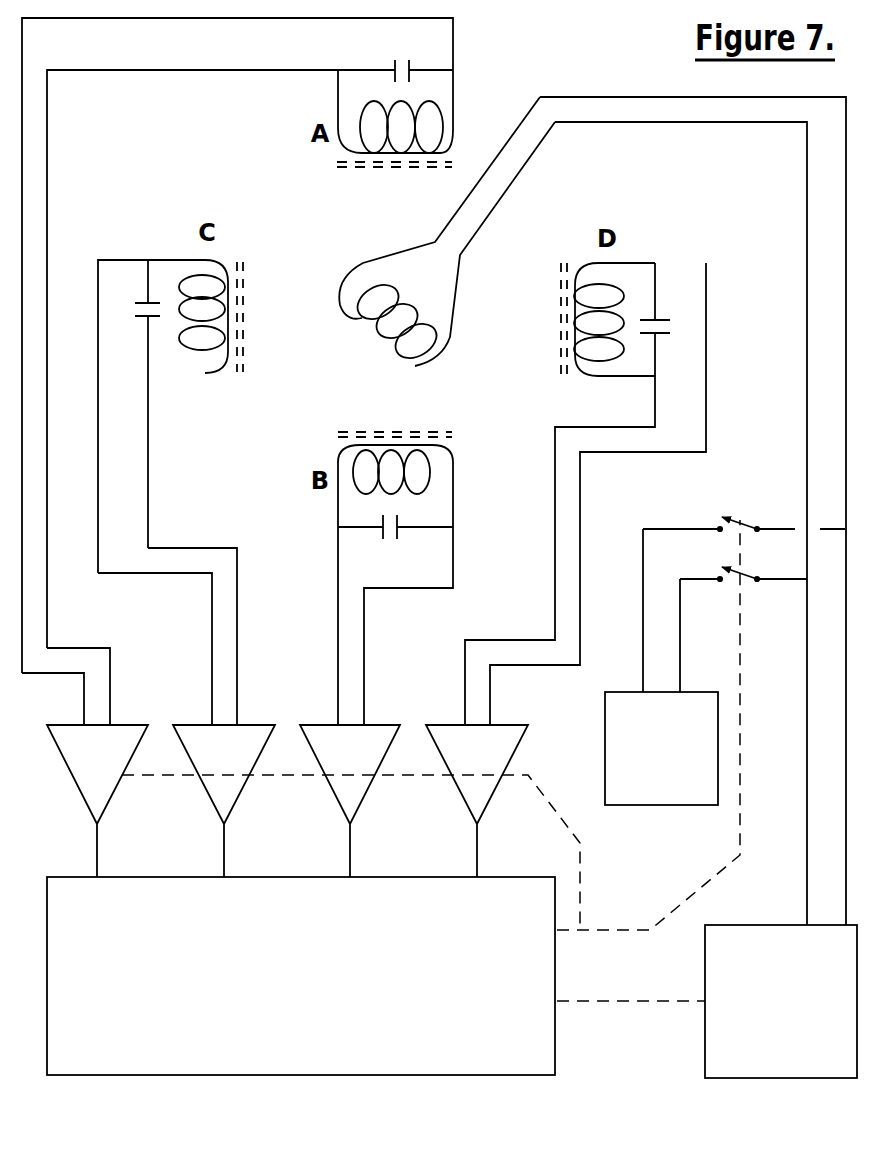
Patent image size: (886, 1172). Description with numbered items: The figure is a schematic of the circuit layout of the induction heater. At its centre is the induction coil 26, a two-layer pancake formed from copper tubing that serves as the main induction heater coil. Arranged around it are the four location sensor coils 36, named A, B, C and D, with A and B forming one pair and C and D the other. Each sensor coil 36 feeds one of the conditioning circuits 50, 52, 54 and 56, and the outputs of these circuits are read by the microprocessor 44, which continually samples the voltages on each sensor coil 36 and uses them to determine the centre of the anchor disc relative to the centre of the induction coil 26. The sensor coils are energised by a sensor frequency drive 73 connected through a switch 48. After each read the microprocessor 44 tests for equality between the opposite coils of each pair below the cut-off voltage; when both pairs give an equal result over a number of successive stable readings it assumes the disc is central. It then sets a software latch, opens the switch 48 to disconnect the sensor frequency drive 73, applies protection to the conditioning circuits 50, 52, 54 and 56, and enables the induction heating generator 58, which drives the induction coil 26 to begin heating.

The induction coil 26 is at (363, 332).
The location sensor coil 36 is at (455, 127).
The microprocessor 44 is at (301, 976).
The switch 48 is at (742, 523).
The conditioning circuit 50 is at (97, 801).
The conditioning circuit 52 is at (224, 801).
The conditioning circuit 54 is at (350, 801).
The conditioning circuit 56 is at (477, 801).
The induction heating generator 58 is at (781, 1001).
The sensor frequency drive 73 is at (661, 667).